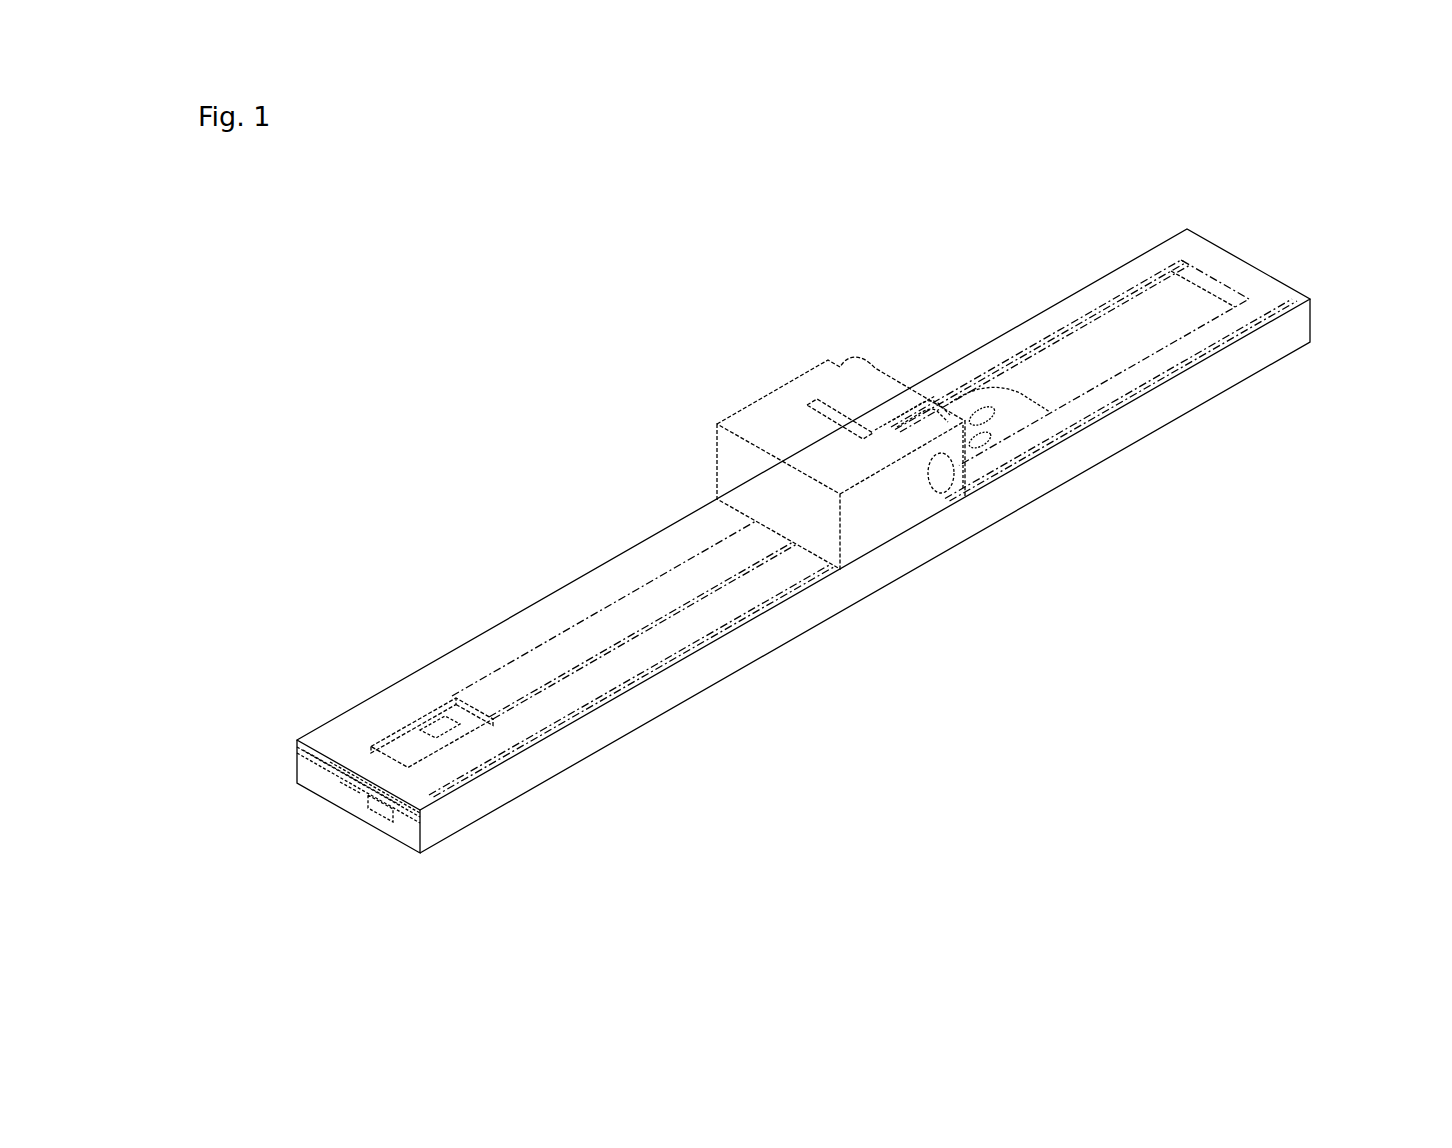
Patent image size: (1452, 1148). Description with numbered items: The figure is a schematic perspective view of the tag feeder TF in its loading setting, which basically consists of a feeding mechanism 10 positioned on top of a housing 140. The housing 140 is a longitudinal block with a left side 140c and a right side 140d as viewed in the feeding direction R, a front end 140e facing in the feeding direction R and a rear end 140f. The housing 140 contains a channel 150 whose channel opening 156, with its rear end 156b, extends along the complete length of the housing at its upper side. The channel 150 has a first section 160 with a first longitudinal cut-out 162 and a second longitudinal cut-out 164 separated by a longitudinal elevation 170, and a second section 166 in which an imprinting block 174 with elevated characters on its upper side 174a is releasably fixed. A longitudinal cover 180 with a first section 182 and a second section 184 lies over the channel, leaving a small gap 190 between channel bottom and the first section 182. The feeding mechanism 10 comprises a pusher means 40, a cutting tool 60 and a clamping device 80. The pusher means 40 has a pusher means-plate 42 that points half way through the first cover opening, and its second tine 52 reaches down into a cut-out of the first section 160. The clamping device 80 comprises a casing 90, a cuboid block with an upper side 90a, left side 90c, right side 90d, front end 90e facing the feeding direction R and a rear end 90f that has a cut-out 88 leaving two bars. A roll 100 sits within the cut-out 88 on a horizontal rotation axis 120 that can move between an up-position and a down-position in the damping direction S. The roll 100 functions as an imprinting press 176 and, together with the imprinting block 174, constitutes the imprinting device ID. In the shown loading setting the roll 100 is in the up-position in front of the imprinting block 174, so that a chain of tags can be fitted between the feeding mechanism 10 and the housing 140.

The feeding mechanism 10 is at (640, 606).
The pusher means 40 is at (545, 598).
The pusher means-plate 42 is at (548, 668).
The second tine 52 is at (433, 723).
The cutting tool 60 is at (453, 723).
The clamping device 80 is at (717, 383).
The cut-out 88 is at (898, 417).
The casing 90 is at (712, 478).
The upper side of casing 90a is at (758, 413).
The left side of casing 90c is at (853, 532).
The right side of casing 90d is at (767, 360).
The front end of casing 90e is at (810, 532).
The rear end of casing 90f is at (868, 317).
The roll 100 is at (862, 404).
The horizontal rotation axis 120 is at (945, 465).
The housing 140 is at (450, 820).
The left side of housing 140c is at (1248, 362).
The right side of housing 140d is at (988, 310).
The front end of housing 140e is at (308, 764).
The rear end of housing 140f is at (1364, 295).
The channel 150 is at (1175, 278).
The channel opening 156 is at (1118, 330).
The rear end of channel opening 156b is at (1197, 306).
The first section of channel 160 is at (397, 743).
The first longitudinal cut-out 162 is at (377, 800).
The second longitudinal cut-out 164 is at (347, 775).
The second section of channel 166 is at (1205, 306).
The longitudinal elevation 170 is at (355, 787).
The imprinting block 174 is at (1020, 415).
The upper side of imprinting block 174a is at (1000, 425).
The imprinting press 176 is at (897, 275).
The cover 180 is at (740, 745).
The first section of cover 182 is at (495, 748).
The second section of cover 184 is at (1160, 370).
The gap 190 is at (333, 770).
The imprinting device ID is at (853, 383).
The tag feeder TF is at (512, 268).
The damping direction S is at (937, 650).
The feeding direction R is at (468, 707).